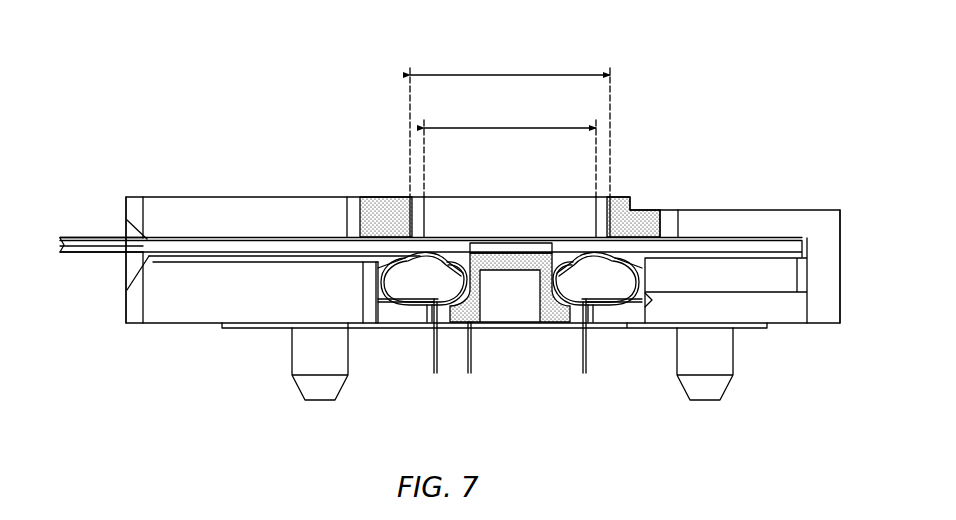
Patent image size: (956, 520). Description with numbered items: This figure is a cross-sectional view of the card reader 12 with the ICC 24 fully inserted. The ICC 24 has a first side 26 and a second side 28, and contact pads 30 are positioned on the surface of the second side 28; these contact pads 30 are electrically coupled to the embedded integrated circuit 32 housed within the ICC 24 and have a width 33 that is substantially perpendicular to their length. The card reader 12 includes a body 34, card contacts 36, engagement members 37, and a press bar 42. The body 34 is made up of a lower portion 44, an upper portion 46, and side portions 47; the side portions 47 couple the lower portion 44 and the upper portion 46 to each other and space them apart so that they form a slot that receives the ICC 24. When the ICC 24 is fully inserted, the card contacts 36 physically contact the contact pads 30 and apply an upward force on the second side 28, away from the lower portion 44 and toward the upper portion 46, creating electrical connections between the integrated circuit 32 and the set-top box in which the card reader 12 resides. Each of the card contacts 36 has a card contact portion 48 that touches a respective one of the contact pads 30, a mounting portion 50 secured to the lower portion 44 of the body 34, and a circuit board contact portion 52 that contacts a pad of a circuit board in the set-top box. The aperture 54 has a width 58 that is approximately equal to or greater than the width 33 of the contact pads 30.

The card reader 12 is at (177, 110).
The ICC 24 is at (97, 243).
The first side 26 is at (80, 238).
The second side 28 is at (90, 257).
The contact pads 30 is at (432, 252).
The embedded integrated circuit 32 is at (510, 243).
The width 33 is at (496, 128).
The body 34 is at (787, 223).
The card contacts 36 is at (617, 258).
The engagement members 37 is at (300, 363).
The press bar 42 is at (383, 203).
The lower portion 44 is at (163, 308).
The upper portion 46 is at (718, 223).
The side portions 47 is at (127, 295).
The card contact portion 48 is at (453, 260).
The mounting portion 50 is at (378, 288).
The circuit board contact portion 52 is at (433, 362).
The aperture 54 is at (500, 207).
The width 58 is at (497, 75).